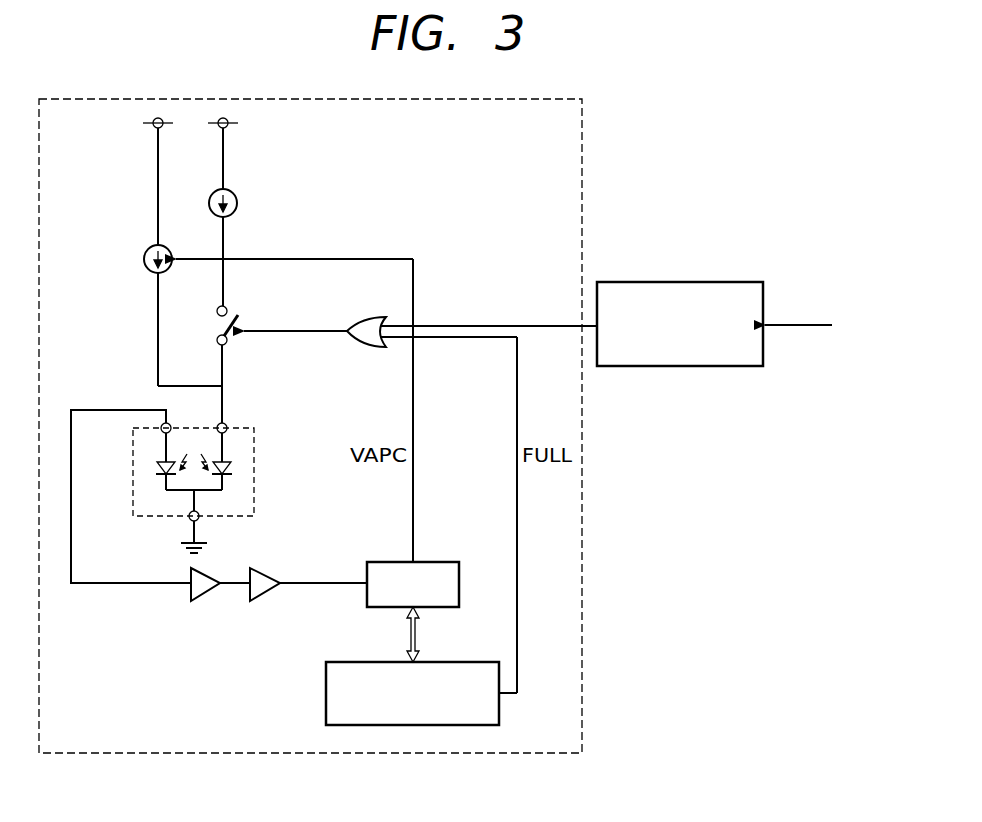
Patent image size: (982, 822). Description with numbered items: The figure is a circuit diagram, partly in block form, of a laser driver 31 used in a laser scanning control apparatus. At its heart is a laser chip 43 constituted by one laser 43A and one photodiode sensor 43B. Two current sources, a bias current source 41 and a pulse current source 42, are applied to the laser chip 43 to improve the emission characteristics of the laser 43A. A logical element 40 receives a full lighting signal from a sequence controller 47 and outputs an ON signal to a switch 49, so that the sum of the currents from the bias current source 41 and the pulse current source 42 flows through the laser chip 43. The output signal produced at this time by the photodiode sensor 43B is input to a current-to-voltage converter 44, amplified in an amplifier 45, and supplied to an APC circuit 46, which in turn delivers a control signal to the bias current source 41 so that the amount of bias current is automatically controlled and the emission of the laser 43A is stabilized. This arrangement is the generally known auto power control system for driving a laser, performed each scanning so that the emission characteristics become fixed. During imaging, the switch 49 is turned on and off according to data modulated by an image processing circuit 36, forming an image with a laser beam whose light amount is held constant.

The laser driver circuit 31 is at (165, 753).
The image processing circuit 36 is at (718, 282).
The logical element 40 is at (366, 349).
The bias current source 41 is at (151, 247).
The pulse current source 42 is at (235, 192).
The laser chip 43 is at (192, 472).
The laser 43A is at (230, 470).
The PD sensor 43B is at (160, 468).
The current-to-voltage converter 44 is at (209, 569).
The amplifier 45 is at (267, 569).
The APC circuit 46 is at (437, 562).
The sequence controller 47 is at (468, 662).
The switch 49 is at (218, 323).